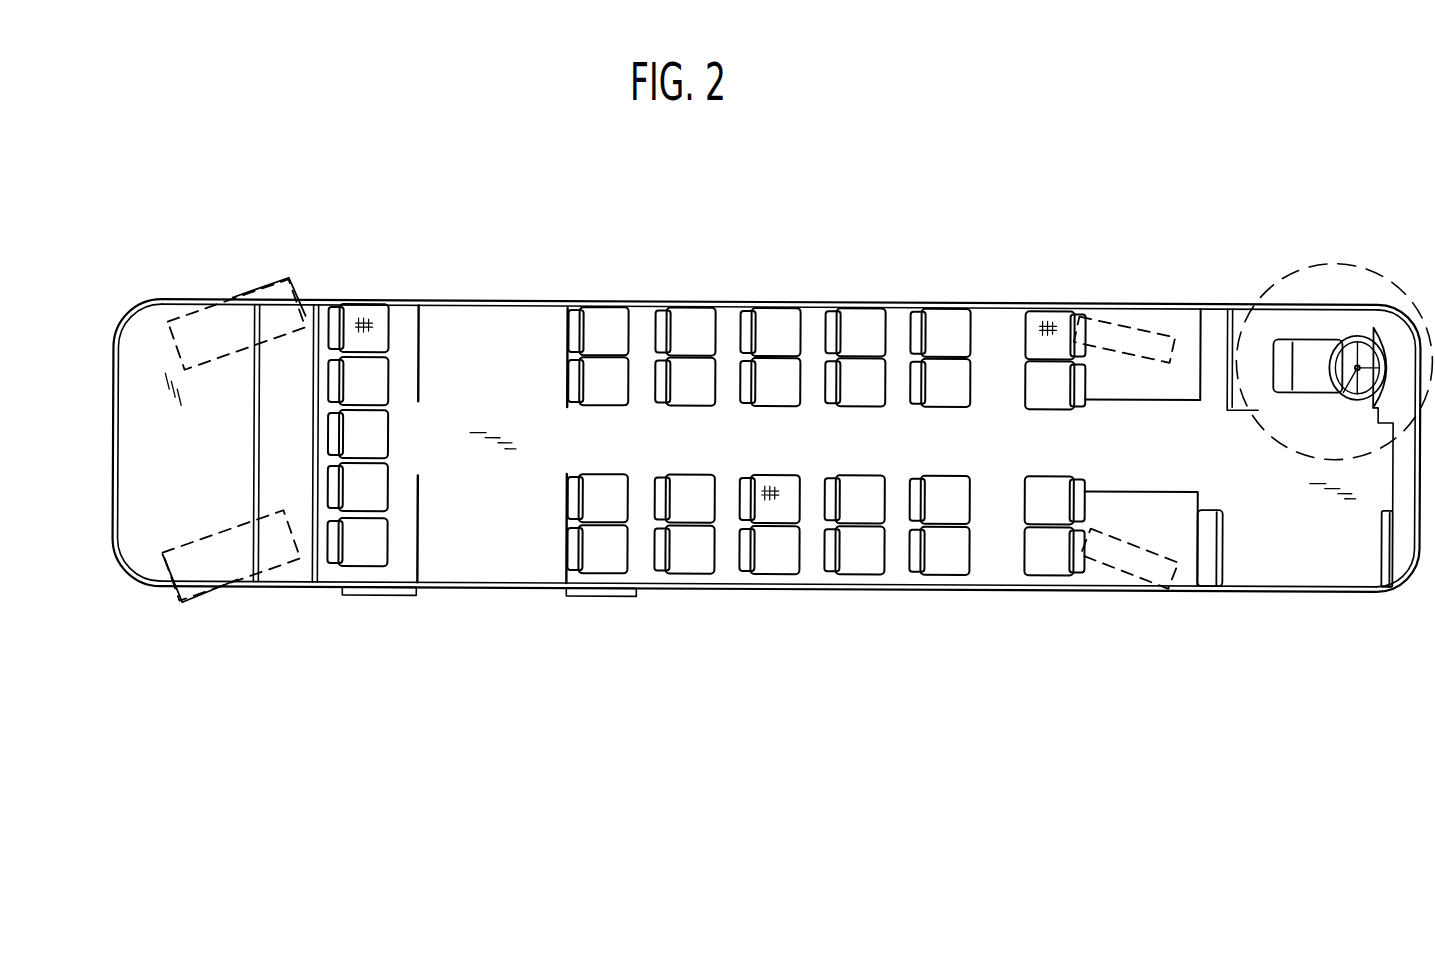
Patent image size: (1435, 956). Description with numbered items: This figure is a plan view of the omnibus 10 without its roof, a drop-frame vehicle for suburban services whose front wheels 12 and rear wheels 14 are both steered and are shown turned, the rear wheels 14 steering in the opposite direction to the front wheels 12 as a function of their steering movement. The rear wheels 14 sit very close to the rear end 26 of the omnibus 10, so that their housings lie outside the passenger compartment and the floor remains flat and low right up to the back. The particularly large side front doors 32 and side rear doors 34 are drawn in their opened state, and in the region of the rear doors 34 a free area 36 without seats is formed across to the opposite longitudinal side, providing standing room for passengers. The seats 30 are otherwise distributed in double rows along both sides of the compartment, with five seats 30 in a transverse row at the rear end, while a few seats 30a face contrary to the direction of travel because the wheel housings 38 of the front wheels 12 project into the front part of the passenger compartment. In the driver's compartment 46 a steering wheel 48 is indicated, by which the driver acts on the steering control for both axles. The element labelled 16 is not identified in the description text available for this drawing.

The omnibus 10 is at (900, 603).
The front wheels 12 is at (1082, 315).
The rear wheels 14 is at (280, 281).
The side wall 16 is at (822, 301).
The rear end 26 is at (104, 330).
The seats 30 is at (382, 510).
The seats facing contrary to the direction of travel 30a is at (1030, 385).
The side front doors 32 is at (1385, 575).
The side rear doors 34 is at (578, 600).
The free area 36 is at (488, 340).
The wheel housings of the front wheels 38 is at (1183, 335).
The driver's compartment 46 is at (1392, 276).
The steering wheel 48 is at (1342, 330).